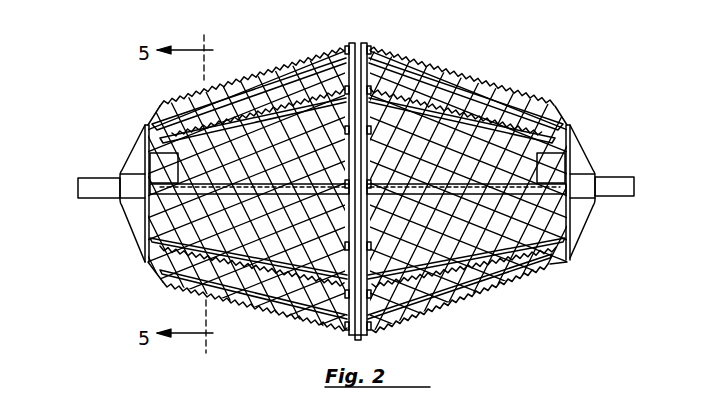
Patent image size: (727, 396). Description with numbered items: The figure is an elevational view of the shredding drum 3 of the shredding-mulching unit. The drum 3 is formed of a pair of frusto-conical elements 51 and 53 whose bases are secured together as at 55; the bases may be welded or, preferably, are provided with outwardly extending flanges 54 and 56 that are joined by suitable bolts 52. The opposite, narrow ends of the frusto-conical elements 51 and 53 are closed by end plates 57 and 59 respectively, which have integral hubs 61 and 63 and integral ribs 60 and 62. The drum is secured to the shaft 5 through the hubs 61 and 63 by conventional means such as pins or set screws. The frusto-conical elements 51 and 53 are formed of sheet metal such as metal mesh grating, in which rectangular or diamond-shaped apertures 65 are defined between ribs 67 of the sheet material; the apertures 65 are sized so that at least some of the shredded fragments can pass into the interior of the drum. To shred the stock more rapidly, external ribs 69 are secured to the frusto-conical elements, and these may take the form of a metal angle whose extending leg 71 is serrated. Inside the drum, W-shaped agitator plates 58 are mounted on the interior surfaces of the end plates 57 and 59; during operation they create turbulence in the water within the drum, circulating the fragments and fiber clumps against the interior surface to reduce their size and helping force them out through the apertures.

The shredding drum 3 is at (572, 114).
The shaft 5 is at (612, 182).
The frusto-conical element 51 is at (146, 116).
The bolts 52 is at (372, 52).
The frusto-conical element 53 is at (565, 265).
The flange 54 is at (347, 43).
The base joint 55 is at (361, 340).
The flange 56 is at (364, 45).
The end plate 57 is at (147, 132).
The agitator plate 58 is at (142, 157).
The end plate 59 is at (580, 237).
The rib 60 is at (133, 143).
The hub 61 is at (112, 176).
The rib 62 is at (580, 215).
The hub 63 is at (603, 197).
The apertures 65 is at (165, 243).
The ribs of sheet material 67 is at (172, 273).
The external ribs 69 is at (175, 218).
The extending leg 71 is at (168, 128).